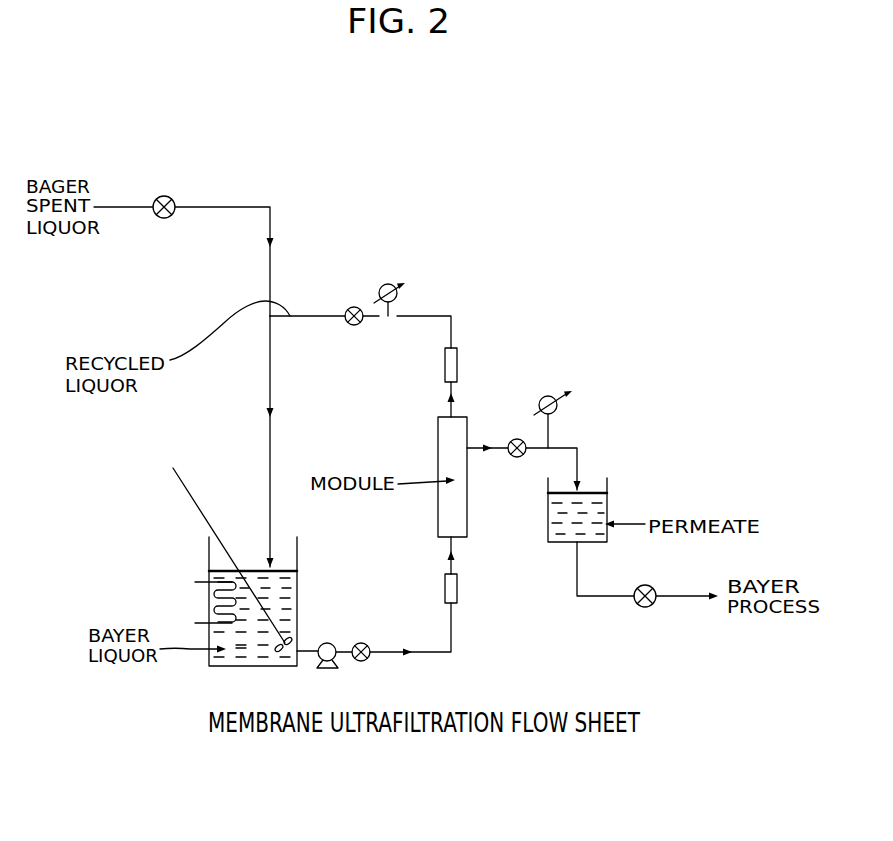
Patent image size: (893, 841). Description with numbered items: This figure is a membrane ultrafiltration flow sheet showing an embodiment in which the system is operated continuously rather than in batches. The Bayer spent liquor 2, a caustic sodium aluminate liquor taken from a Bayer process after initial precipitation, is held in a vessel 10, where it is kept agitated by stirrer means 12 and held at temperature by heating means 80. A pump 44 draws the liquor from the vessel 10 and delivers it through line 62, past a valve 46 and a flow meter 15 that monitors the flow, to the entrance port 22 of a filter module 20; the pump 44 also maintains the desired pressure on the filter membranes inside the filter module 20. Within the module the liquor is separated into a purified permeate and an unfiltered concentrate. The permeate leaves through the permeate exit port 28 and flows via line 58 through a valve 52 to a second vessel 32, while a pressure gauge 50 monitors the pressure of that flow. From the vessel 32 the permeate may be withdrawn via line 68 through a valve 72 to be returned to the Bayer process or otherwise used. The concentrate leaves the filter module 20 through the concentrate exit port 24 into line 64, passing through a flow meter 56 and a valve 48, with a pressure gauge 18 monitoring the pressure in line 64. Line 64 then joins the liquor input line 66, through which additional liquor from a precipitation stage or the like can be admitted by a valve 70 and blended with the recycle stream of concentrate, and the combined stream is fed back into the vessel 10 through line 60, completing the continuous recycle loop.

The Bayer spent liquor 2 is at (257, 647).
The vessel 10 is at (285, 593).
The stirrer means 12 is at (185, 465).
The flow meter 15 is at (457, 592).
The pressure gauge 18 is at (382, 284).
The filter module 20 is at (438, 446).
The entrance port 22 is at (456, 540).
The concentrate exit port 24 is at (453, 412).
The permeate exit port 28 is at (470, 445).
The vessel 32 is at (598, 510).
The pump 44 is at (330, 668).
The valve 46 is at (362, 642).
The valve 48 is at (353, 306).
The pressure gauge 50 is at (556, 394).
The valve 52 is at (512, 458).
The flow meter 56 is at (458, 362).
The line 58 is at (568, 448).
The line 60 is at (270, 375).
The line 62 is at (451, 638).
The line 64 is at (425, 315).
The liquor input line 66 is at (228, 206).
The line 68 is at (596, 596).
The valve 70 is at (170, 195).
The valve 72 is at (650, 586).
The heating means 80 is at (197, 580).